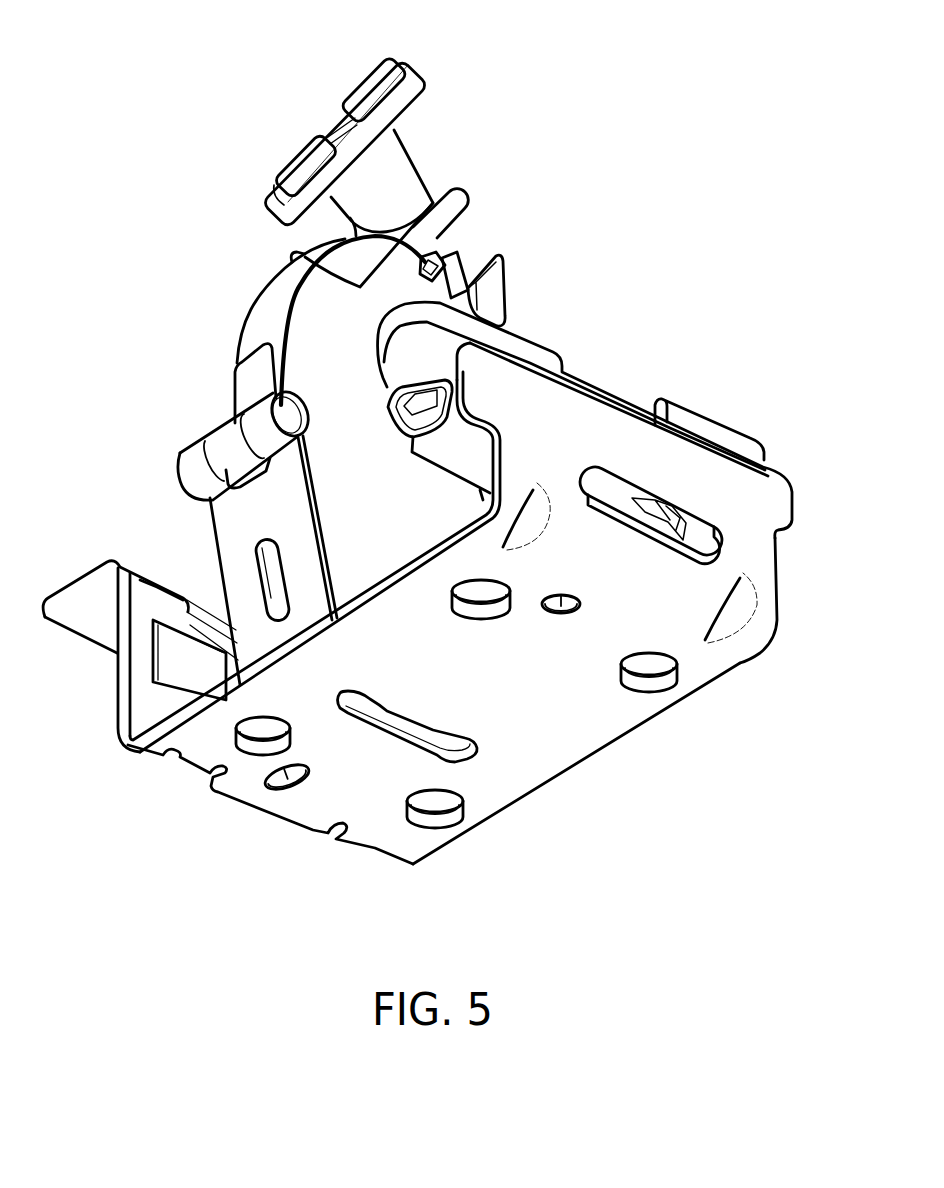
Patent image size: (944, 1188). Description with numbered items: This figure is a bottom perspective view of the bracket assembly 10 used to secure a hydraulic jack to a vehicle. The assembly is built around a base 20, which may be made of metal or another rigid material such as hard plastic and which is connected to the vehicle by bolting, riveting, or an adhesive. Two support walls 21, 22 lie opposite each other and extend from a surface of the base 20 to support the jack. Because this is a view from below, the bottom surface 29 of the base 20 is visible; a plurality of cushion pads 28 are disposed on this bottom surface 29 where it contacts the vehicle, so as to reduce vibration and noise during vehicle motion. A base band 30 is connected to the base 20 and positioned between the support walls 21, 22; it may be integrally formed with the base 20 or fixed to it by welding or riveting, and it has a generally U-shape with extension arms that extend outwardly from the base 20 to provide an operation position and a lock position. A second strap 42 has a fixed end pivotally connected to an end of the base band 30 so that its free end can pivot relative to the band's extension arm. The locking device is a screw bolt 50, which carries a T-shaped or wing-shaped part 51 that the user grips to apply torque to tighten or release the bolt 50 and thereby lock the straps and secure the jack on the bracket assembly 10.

The bracket assembly 10 is at (577, 203).
The base 20 is at (661, 616).
The support wall 21 is at (140, 672).
The support wall 22 is at (750, 547).
The cushion pad 28 is at (433, 815).
The bottom surface 29 is at (563, 745).
The base band 30 is at (217, 518).
The second strap 42 is at (267, 297).
The screw bolt 50 is at (397, 98).
The T-shaped or wing-shaped part 51 is at (367, 93).